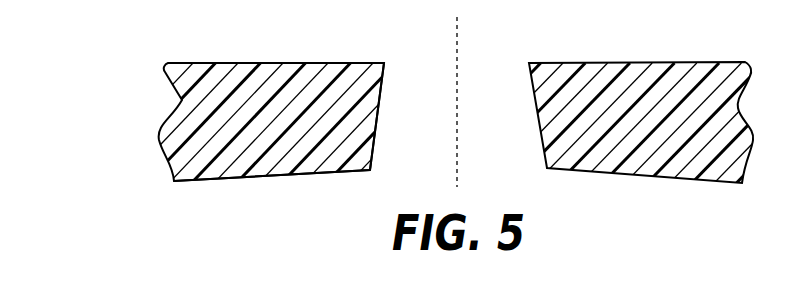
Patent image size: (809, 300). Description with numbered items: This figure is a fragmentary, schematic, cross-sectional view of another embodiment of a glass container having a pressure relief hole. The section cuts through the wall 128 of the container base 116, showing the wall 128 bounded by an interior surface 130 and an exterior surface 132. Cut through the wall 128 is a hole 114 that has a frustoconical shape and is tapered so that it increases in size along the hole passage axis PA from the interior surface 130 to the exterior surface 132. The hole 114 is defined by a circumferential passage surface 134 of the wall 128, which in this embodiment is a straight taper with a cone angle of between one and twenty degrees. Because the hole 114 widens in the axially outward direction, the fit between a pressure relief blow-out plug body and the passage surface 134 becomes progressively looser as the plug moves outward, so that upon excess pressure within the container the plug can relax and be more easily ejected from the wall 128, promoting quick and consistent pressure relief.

The base 116 is at (131, 108).
The wall 128 is at (245, 87).
The interior surface 130 is at (275, 63).
The circumferential passage surface 134 is at (373, 138).
The exterior surface 132 is at (267, 176).
The hole 114 is at (486, 114).
The hole passage axis PA is at (458, 32).